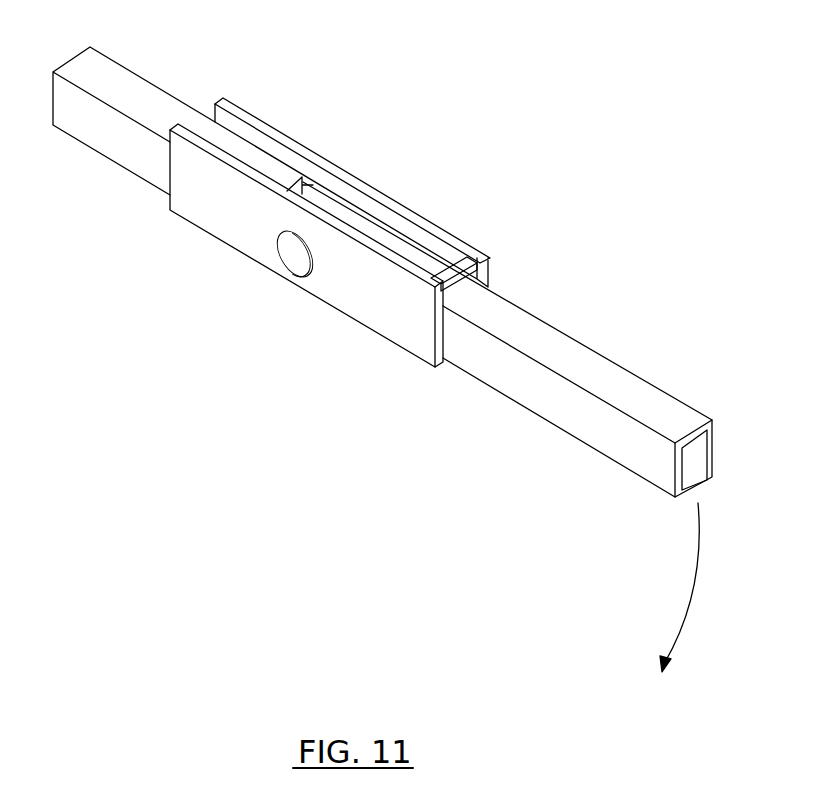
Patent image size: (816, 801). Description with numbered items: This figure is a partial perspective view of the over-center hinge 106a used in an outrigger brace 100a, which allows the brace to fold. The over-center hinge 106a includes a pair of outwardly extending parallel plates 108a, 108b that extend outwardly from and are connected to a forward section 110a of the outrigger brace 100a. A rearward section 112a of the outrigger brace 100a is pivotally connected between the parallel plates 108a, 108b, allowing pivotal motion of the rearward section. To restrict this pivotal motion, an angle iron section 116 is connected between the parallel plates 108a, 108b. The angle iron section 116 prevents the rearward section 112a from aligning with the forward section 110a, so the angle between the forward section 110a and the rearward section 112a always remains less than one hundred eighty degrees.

The outrigger brace 100a is at (516, 369).
The over-center hinge 106a is at (207, 278).
The parallel plate 108a is at (382, 306).
The parallel plate 108b is at (408, 210).
The forward section 110a is at (122, 80).
The rearward section 112a is at (548, 410).
The angle iron section 116 is at (464, 287).